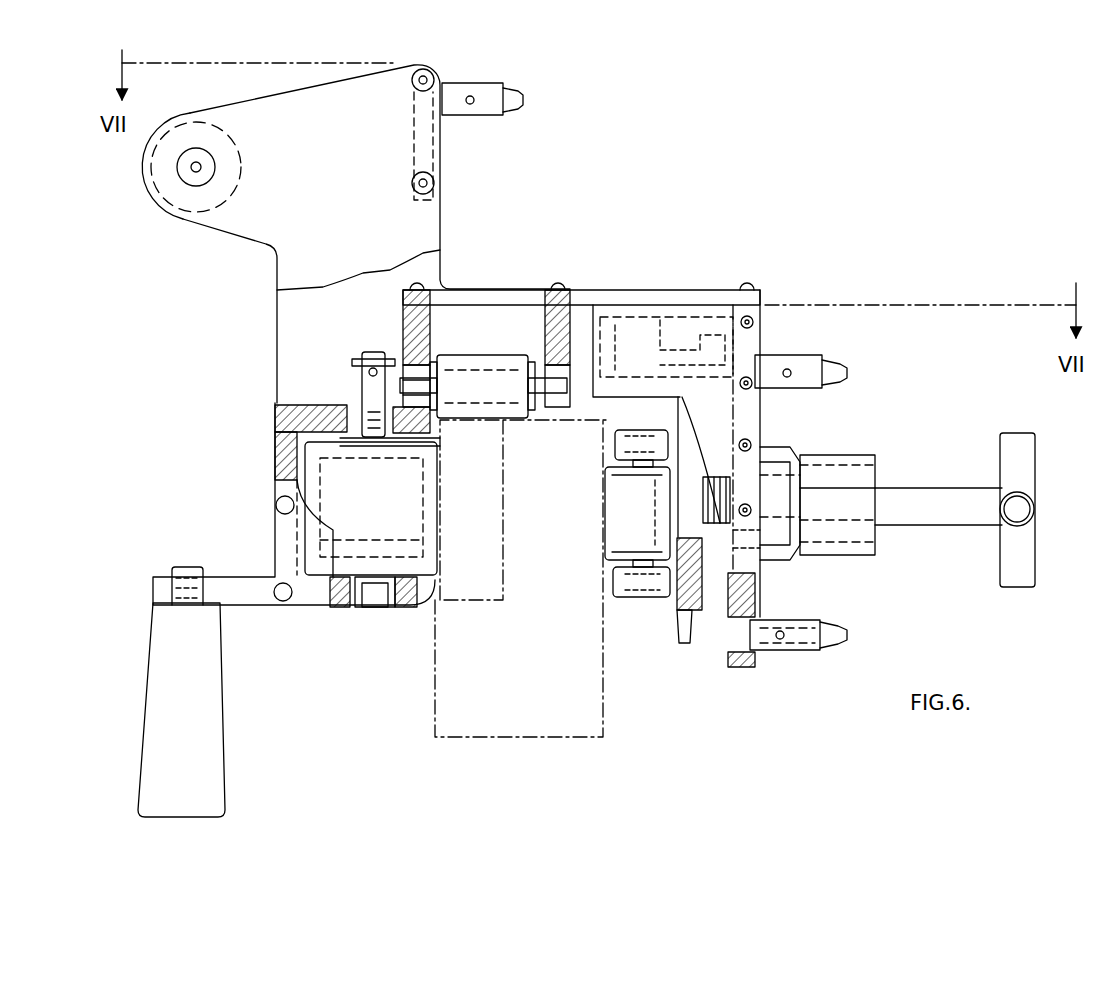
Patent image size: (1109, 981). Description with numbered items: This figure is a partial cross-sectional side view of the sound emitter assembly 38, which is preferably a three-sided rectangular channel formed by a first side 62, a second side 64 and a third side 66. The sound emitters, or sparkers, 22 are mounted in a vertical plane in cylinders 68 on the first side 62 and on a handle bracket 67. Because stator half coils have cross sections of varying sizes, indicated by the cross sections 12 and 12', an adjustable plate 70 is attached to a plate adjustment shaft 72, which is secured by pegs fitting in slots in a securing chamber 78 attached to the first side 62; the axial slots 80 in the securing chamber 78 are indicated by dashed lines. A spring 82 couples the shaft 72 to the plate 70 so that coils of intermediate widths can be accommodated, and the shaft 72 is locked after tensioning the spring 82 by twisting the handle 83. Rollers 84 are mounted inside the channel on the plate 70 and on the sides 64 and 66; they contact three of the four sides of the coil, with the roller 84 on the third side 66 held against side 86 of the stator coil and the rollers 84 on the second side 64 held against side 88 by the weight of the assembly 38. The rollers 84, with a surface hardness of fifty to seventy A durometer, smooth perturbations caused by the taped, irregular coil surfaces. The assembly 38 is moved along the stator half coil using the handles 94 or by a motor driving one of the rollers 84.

The cross section 12 is at (546, 578).
The cross section 12' is at (523, 510).
The sound emitter 22 is at (520, 100).
The sound emitter assembly 38 is at (623, 287).
The first side 62 is at (752, 413).
The second side 64 is at (505, 293).
The third side 66 is at (277, 532).
The handle bracket 67 is at (433, 217).
The cylinder 68 is at (487, 107).
The adjustable plate 70 is at (700, 580).
The plate adjustment shaft 72 is at (937, 498).
The securing chamber 78 is at (860, 545).
The axial slot 80 is at (837, 470).
The spring 82 is at (715, 523).
The handle 83 is at (1025, 472).
The roller 84 is at (493, 360).
The side of stator coil 86 is at (438, 563).
The side of stator half coil 88 is at (488, 420).
The handle 94 is at (182, 203).